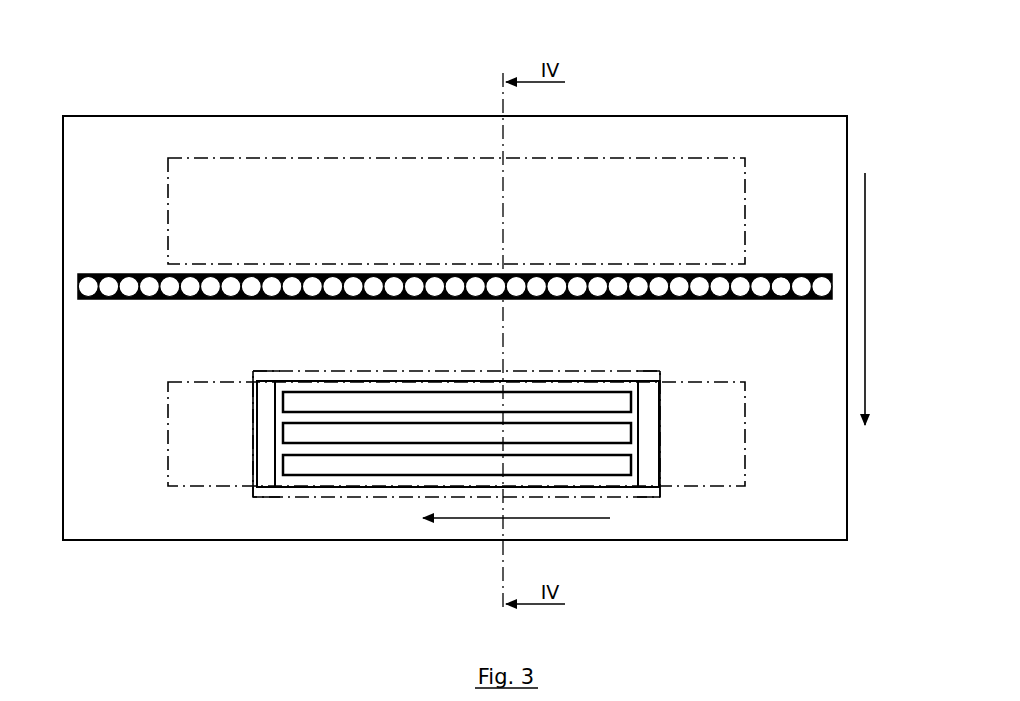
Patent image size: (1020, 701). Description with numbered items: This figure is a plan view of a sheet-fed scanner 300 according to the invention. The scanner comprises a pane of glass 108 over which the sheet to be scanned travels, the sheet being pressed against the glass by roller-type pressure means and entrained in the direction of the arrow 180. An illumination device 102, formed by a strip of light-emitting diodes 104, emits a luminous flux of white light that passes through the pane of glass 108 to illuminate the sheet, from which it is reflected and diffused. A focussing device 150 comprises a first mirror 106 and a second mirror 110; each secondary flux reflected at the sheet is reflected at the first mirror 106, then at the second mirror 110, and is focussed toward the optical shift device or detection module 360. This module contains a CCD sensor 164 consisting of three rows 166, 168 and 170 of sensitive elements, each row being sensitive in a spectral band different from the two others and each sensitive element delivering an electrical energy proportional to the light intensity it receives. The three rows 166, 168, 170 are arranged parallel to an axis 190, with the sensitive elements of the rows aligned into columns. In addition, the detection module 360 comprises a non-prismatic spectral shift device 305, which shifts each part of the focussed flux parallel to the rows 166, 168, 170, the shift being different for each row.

The sheet-fed scanner 300 is at (162, 66).
The pane of glass 108 is at (242, 115).
The first mirror 106 is at (620, 167).
The focussing device 150 is at (742, 88).
The arrow 180 is at (866, 215).
The light-emitting diodes 104 is at (779, 284).
The illumination device 102 is at (165, 300).
The non-prismatic spectral shift device 305 is at (298, 371).
The first row 166 is at (415, 405).
The CCD sensor 164 is at (659, 427).
The second mirror 110 is at (168, 474).
The second row 168 is at (318, 437).
The third row 170 is at (403, 470).
The axis 190 is at (478, 518).
The optical shift device or detection module 360 is at (615, 567).